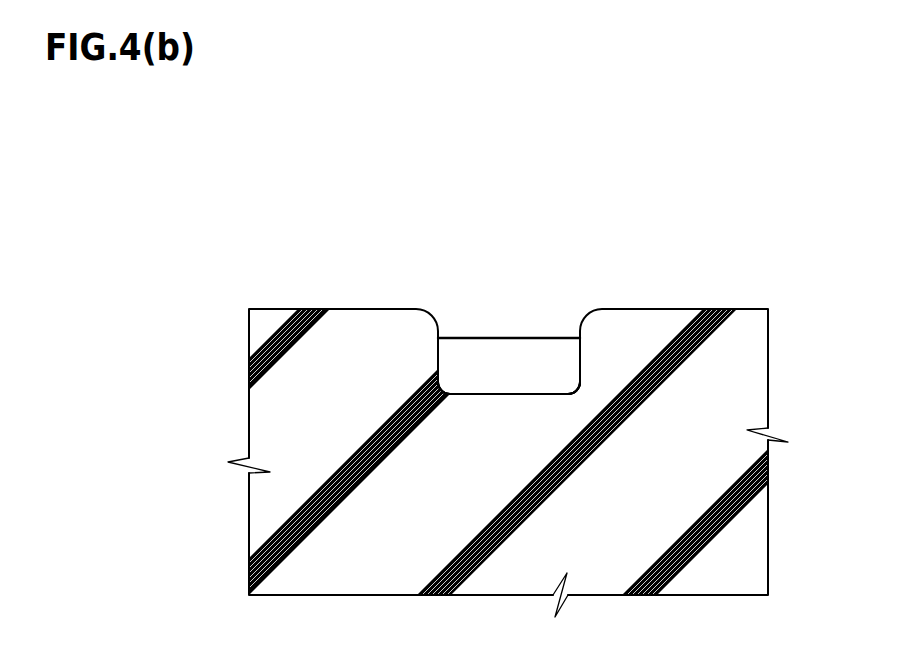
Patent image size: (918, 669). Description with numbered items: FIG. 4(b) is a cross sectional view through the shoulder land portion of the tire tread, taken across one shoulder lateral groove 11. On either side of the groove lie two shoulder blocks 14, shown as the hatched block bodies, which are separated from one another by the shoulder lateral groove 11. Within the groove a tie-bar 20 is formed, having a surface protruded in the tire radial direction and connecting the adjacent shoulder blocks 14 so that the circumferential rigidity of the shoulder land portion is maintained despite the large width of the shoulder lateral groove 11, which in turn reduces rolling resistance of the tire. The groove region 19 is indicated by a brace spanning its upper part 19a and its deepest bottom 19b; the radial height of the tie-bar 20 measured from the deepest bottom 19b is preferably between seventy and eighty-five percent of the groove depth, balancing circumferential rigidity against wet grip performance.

The shoulder lateral groove 11 is at (462, 336).
The shoulder block 14 is at (363, 307).
The groove 19 is at (488, 149).
The groove upper portion 19a is at (557, 338).
The deepest bottom 19b is at (522, 394).
The tie-bar 20 is at (490, 372).